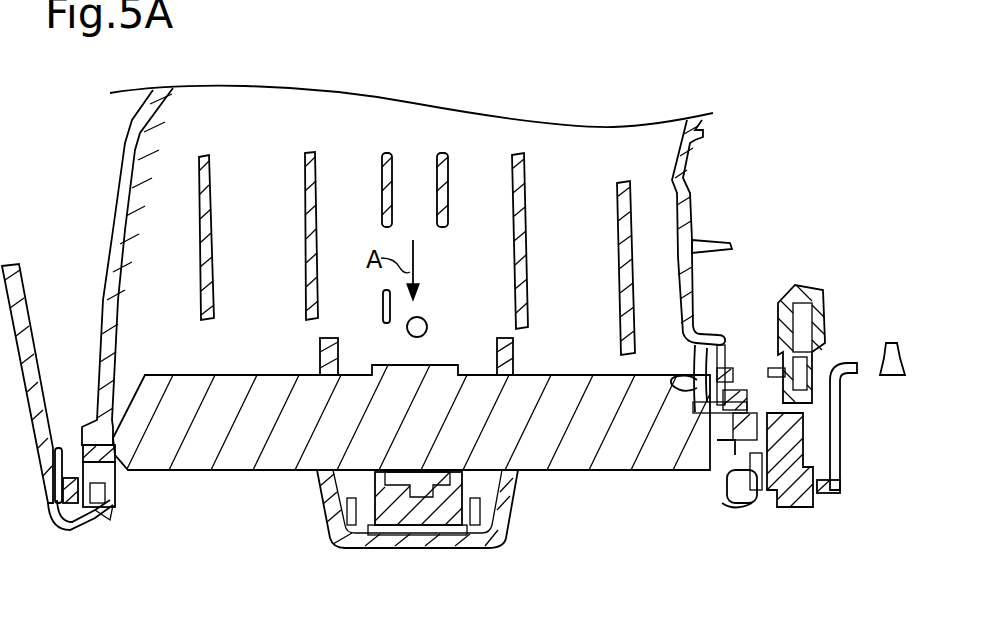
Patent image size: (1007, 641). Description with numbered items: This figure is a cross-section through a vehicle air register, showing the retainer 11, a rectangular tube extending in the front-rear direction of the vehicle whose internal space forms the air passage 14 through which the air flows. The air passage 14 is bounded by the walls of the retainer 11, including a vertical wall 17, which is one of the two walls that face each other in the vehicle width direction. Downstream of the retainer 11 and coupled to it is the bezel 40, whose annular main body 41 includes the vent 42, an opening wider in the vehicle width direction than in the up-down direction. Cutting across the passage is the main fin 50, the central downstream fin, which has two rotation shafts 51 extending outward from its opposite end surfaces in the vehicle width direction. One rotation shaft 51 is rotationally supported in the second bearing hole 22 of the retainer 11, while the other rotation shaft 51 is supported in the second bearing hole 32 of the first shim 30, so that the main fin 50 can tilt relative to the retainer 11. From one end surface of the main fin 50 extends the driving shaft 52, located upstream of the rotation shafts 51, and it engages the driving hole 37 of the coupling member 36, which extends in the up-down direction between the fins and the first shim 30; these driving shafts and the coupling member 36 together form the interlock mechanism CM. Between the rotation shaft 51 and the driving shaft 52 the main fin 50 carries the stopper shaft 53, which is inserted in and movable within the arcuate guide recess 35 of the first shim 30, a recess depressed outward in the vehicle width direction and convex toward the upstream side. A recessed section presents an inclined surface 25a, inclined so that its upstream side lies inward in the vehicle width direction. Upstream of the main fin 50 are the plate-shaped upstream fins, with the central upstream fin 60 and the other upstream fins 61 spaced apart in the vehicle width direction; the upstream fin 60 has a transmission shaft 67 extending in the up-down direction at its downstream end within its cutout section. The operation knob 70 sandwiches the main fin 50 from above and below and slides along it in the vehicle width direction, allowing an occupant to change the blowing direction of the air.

The retainer 11 is at (116, 226).
The air passage 14 is at (272, 145).
The vertical wall 17 is at (110, 283).
The second bearing hole 22 is at (115, 460).
The inclined surface 25a is at (115, 482).
The first shim 30 is at (747, 393).
The second bearing hole 32 is at (720, 465).
The guide recess 35 is at (773, 440).
The coupling member 36 is at (710, 334).
The driving hole 37 is at (683, 380).
The bezel 40 is at (60, 540).
The main body 41 is at (73, 530).
The vent 42 is at (107, 518).
The main fin 50 is at (267, 472).
The rotation shaft 51 is at (60, 448).
The driving shaft 52 is at (722, 372).
The stopper shaft 53 is at (775, 368).
The upstream fin 60 is at (443, 152).
The upstream fin 61 is at (203, 152).
The transmission shaft 67 is at (424, 319).
The operation knob 70 is at (412, 549).
The interlock mechanism CM is at (650, 480).